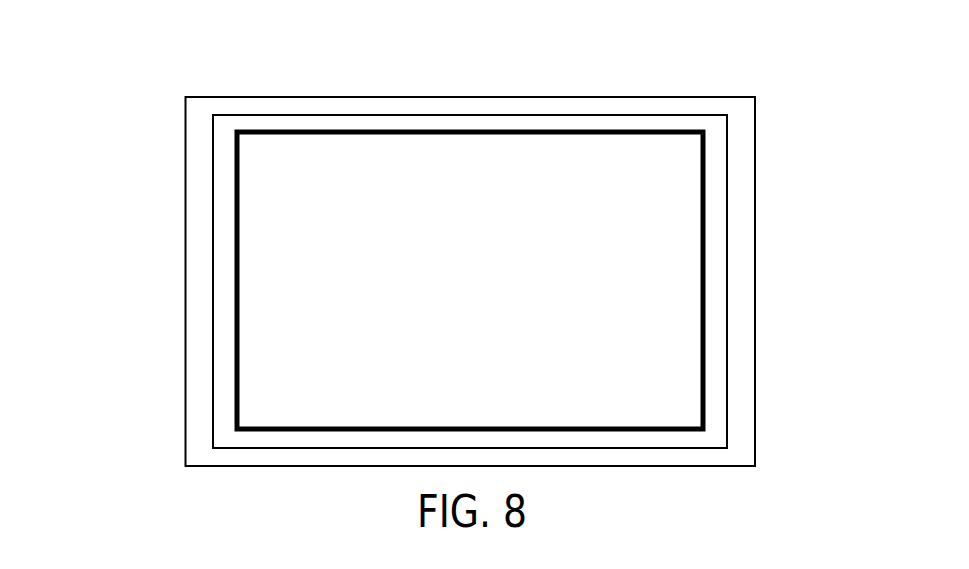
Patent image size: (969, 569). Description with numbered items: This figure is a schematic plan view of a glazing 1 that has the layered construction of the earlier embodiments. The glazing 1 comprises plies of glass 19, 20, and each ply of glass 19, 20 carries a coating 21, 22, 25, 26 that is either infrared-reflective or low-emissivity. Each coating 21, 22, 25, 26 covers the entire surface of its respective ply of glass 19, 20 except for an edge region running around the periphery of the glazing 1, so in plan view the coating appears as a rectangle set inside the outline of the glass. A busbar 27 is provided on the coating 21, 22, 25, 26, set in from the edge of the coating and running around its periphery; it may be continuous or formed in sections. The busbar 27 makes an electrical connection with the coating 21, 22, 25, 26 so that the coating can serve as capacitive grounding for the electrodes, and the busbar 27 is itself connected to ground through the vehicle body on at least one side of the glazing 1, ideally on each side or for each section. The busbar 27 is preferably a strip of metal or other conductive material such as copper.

The glazing 1 is at (579, 82).
The ply of glass 19 is at (530, 281).
The ply of glass 20 is at (757, 288).
The coating 21 is at (378, 281).
The coating 22 is at (378, 281).
The coating 25 is at (378, 281).
The coating 26 is at (225, 192).
The busbar 27 is at (705, 171).